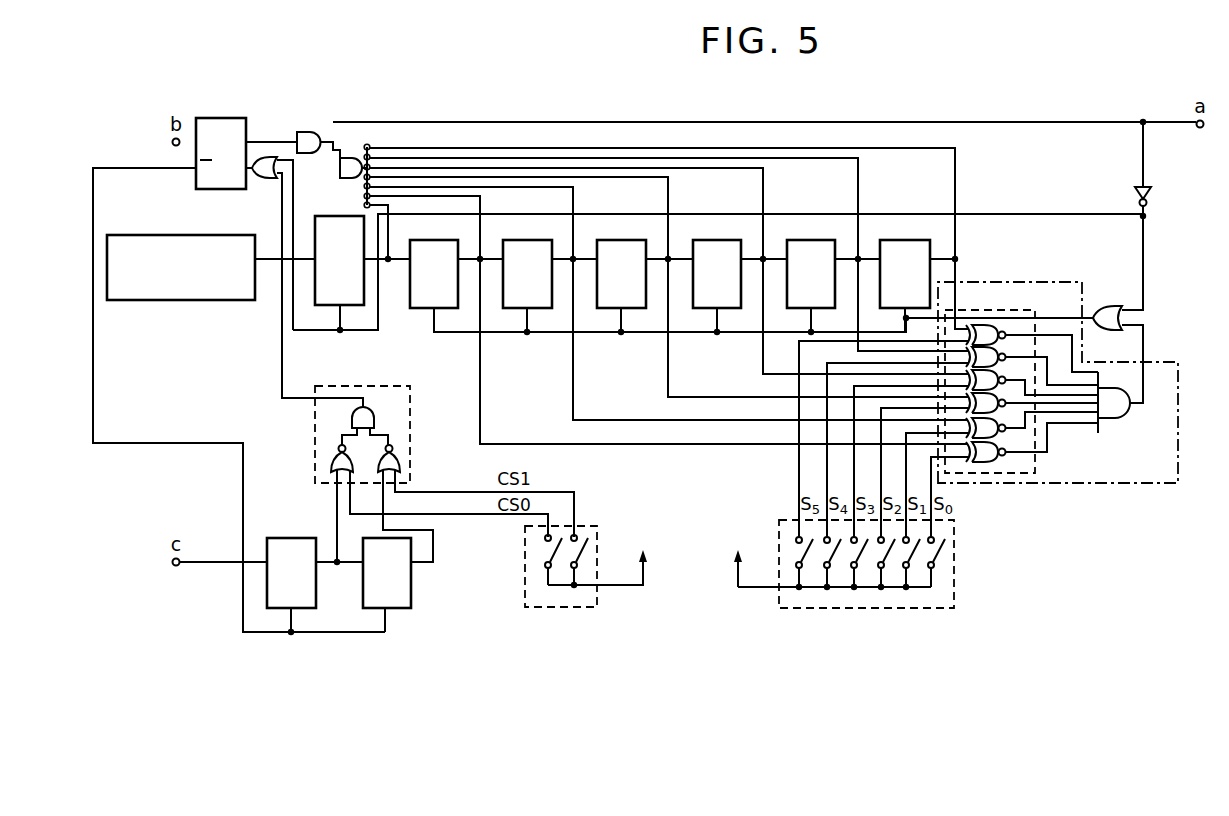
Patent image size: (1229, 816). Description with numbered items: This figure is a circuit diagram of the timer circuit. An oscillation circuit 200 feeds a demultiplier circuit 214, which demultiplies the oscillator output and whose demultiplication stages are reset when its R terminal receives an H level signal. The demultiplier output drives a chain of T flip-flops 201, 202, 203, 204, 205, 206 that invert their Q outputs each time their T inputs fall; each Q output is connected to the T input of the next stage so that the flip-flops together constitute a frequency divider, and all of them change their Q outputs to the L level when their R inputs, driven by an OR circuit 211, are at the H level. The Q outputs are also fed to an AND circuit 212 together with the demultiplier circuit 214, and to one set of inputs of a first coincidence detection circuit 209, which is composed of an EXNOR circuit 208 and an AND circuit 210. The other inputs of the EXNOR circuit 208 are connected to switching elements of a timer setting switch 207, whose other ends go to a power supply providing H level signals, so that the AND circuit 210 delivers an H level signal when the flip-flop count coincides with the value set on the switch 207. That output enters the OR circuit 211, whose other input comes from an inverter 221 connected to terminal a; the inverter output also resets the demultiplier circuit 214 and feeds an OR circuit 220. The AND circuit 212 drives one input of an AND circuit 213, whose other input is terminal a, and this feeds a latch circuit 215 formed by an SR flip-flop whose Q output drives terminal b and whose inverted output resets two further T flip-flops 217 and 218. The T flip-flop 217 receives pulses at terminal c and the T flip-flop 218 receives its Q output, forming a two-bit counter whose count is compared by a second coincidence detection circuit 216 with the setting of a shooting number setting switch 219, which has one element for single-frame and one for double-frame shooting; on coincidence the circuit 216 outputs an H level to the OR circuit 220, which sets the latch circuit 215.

The oscillation circuit 200 is at (187, 235).
The T flip-flop 201 is at (416, 240).
The T flip-flop 202 is at (509, 240).
The T flip-flop 203 is at (604, 240).
The T flip-flop 204 is at (698, 240).
The T flip-flop 205 is at (792, 240).
The T flip-flop 206 is at (886, 240).
The timer setting switch 207 is at (779, 527).
The EXNOR circuit 208 is at (978, 314).
The first coincidence detection circuit 209 is at (1178, 385).
The AND circuit 210 is at (1112, 418).
The OR circuit 211 is at (1110, 306).
The AND circuit 212 is at (353, 158).
The AND circuit 213 is at (309, 132).
The demultiplier circuit 214 is at (341, 216).
The latch circuit 215 is at (220, 118).
The second coincidence detection circuit 216 is at (345, 386).
The T flip-flop 217 is at (288, 538).
The T flip-flop 218 is at (413, 585).
The shooting number setting switch 219 is at (598, 528).
The OR circuit 220 is at (268, 157).
The inverter 221 is at (1151, 196).